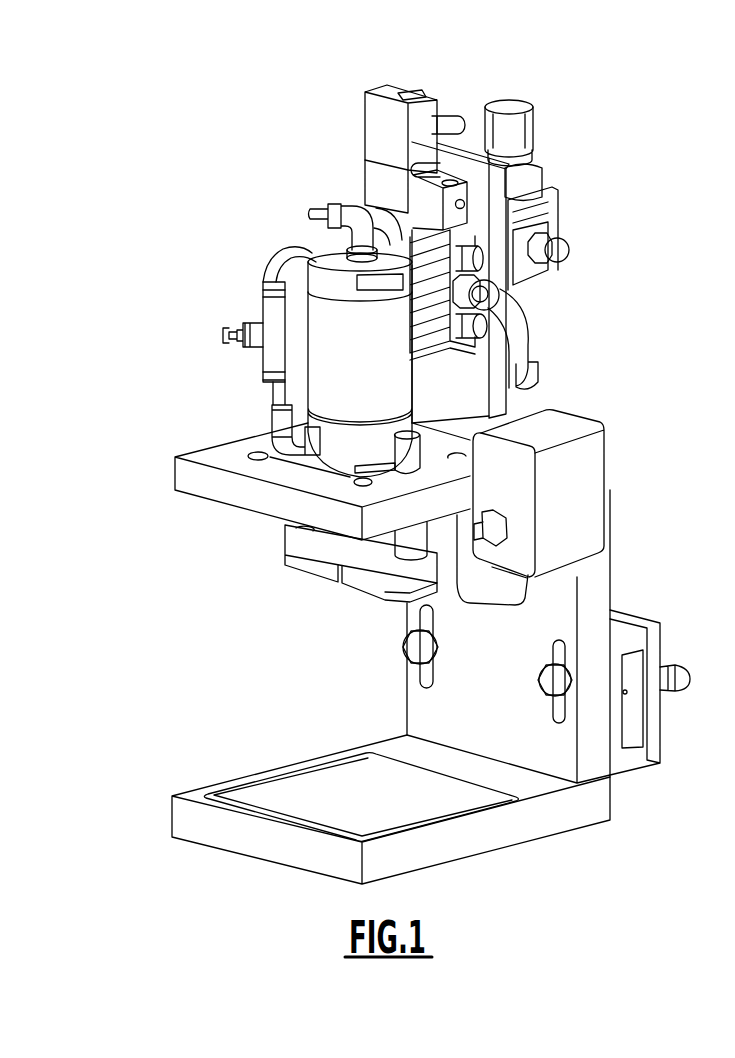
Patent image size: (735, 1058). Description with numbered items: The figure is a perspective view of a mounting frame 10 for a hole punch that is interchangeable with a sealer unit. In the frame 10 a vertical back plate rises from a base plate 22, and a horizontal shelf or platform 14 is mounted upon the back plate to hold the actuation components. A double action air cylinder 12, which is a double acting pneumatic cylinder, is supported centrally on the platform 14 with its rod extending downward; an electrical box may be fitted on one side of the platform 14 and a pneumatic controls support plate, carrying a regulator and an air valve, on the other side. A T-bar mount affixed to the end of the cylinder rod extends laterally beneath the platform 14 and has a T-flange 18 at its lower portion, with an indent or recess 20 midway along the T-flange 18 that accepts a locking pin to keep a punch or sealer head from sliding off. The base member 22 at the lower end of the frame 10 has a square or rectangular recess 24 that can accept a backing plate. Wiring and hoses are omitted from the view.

The mounting frame 10 is at (612, 186).
The double action air cylinder 12 is at (183, 255).
The platform or shelf 14 is at (175, 470).
The T-flange 18 is at (375, 600).
The indent or recess 20 is at (338, 590).
The base plate 22 is at (572, 818).
The square or rectangular recess 24 is at (520, 782).